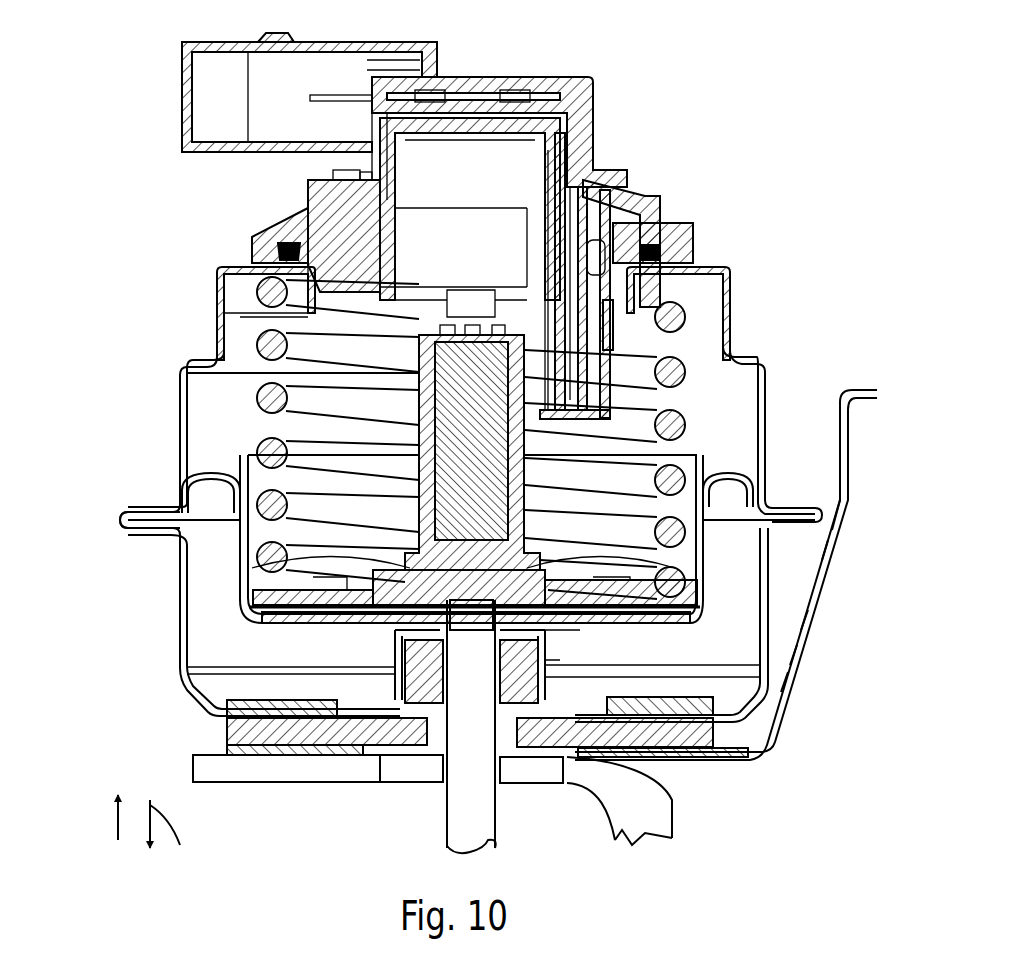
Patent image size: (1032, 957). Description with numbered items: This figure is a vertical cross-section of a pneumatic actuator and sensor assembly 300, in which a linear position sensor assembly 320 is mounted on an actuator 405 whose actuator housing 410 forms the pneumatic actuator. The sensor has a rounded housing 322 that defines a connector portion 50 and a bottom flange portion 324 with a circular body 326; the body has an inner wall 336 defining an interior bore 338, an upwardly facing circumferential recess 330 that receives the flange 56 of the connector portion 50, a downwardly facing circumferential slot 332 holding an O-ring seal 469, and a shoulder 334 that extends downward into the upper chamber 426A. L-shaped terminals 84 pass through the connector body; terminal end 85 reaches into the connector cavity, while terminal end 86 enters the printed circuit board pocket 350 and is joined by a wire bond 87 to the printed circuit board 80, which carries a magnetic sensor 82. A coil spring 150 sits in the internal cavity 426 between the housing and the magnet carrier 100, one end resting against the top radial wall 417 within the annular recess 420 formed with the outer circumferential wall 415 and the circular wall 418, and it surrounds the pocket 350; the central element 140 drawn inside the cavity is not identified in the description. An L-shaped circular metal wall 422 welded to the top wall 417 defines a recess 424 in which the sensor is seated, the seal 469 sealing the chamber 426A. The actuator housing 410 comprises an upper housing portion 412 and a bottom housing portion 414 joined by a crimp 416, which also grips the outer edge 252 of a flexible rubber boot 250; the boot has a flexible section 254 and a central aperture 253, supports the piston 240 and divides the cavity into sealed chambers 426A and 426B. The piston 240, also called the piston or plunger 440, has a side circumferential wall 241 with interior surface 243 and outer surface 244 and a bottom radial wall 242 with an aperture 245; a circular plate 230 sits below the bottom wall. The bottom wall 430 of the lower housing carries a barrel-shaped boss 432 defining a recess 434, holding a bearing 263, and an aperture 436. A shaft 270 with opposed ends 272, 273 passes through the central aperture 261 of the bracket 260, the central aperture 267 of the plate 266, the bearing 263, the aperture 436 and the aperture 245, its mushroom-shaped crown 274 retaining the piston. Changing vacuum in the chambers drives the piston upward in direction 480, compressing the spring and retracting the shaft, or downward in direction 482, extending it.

The connector portion 50 is at (388, 34).
The terminal end 85 is at (312, 97).
The terminals 84 is at (590, 105).
The housing 322 is at (645, 185).
The bottom flange portion 324 is at (652, 200).
The terminal end 86 is at (672, 220).
The linear position sensor assembly 320 is at (668, 212).
The wire bond 87 is at (684, 223).
The circumferential slot 332 is at (690, 244).
The O-ring seal 469 is at (706, 254).
The actuator 405 is at (732, 310).
The printed circuit board 80 is at (612, 333).
The sensor 82 is at (598, 350).
The printed circuit board pocket 350 is at (578, 393).
The coil spring 150 is at (692, 425).
The plunger 140 is at (520, 440).
The outer surface 244 is at (702, 465).
The interior surface 243 is at (835, 525).
The side circumferential wall 241 is at (828, 560).
The piston 240 is at (838, 578).
The bottom radial wall 242 is at (808, 625).
The magnet carrier 100 is at (812, 652).
The circular plate 230 is at (802, 678).
The pneumatic actuator and sensor assembly 300 is at (834, 150).
The inner wall 336 is at (312, 228).
The circular body 326 is at (285, 232).
The recess 424 is at (282, 248).
The circular metal wall 422 is at (275, 258).
The top radial wall 417 is at (262, 268).
The circular wall 418 is at (262, 285).
The annular recess 420 is at (257, 297).
The shoulder 334 is at (232, 310).
The outer circumferential wall 415 is at (198, 352).
The upper chamber 426A is at (205, 392).
The internal cavity 426 is at (218, 416).
The upper housing portion 412 is at (180, 455).
The flexible section 254 is at (205, 478).
The flexible rubber boot 250 is at (176, 493).
The outer edge 252 is at (160, 512).
The crimp 416 is at (125, 522).
The piston or plunger 440 is at (236, 582).
The actuator housing 410 is at (176, 603).
The bottom housing portion 414 is at (178, 634).
The lower chamber 426B is at (207, 652).
The bottom wall 430 is at (228, 730).
The direction 480 is at (107, 804).
The direction 482 is at (185, 841).
The shaft end 273 is at (463, 835).
The shaft 270 is at (463, 822).
The central aperture 267 is at (345, 762).
The bearing 263 is at (395, 690).
The central aperture 253 is at (342, 625).
The aperture 436 is at (395, 635).
The central aperture 261 is at (540, 784).
The bracket 260 is at (637, 825).
The plate 266 is at (762, 757).
The recess 434 is at (602, 742).
The shaft end 272 is at (558, 640).
The barrel-shaped boss 432 is at (582, 630).
The aperture 245 is at (542, 625).
The mushroom-shaped crown 274 is at (758, 575).
The circumferential recess 330 is at (312, 200).
The flange 56 is at (345, 190).
The interior bore 338 is at (447, 236).